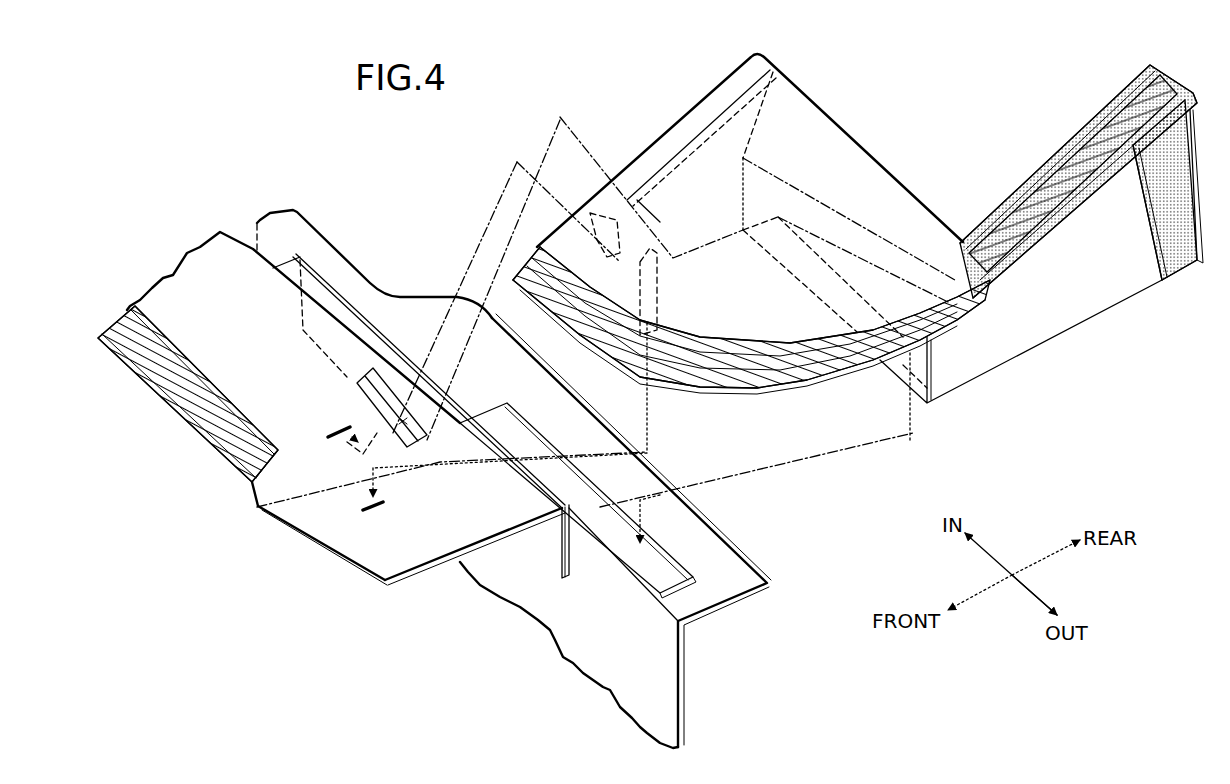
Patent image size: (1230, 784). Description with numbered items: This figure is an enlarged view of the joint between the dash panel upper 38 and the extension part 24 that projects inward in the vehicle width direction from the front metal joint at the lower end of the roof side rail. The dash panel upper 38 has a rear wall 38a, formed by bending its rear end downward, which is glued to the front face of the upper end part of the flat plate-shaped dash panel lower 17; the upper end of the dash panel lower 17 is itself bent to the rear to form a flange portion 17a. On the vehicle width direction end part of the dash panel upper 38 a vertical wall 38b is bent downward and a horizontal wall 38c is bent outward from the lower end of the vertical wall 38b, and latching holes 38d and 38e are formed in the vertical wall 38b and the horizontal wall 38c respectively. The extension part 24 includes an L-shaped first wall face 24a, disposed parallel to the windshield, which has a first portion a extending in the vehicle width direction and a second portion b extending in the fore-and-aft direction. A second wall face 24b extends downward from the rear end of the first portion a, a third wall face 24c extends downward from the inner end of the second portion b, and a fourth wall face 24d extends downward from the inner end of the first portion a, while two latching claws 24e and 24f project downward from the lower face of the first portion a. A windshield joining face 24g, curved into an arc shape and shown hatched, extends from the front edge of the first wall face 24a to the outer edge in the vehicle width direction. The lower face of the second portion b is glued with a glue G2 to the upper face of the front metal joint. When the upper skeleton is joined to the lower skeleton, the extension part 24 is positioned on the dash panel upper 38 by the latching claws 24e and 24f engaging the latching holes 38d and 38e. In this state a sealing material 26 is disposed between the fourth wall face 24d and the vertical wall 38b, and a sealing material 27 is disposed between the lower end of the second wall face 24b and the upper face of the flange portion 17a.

The dash panel lower 17 is at (688, 690).
The flange portion 17a is at (638, 481).
The extension part 24 is at (890, 162).
The first wall face 24a is at (813, 384).
The second wall face 24b is at (740, 133).
The third wall face 24c is at (1090, 283).
The fourth wall face 24d is at (670, 157).
The latching claw 24e is at (600, 225).
The latching claw 24f is at (657, 292).
The windshield joining face 24g is at (613, 337).
The sealing material 26 is at (378, 385).
The sealing material 27 is at (668, 560).
The dash panel upper 38 is at (205, 455).
The rear wall 38a is at (545, 548).
The vertical wall 38b is at (298, 478).
The horizontal wall 38c is at (472, 522).
The latching hole 38d is at (340, 428).
The latching hole 38e is at (383, 505).
The glue G2 is at (1080, 150).
The first portion a is at (745, 323).
The second portion b is at (1033, 197).